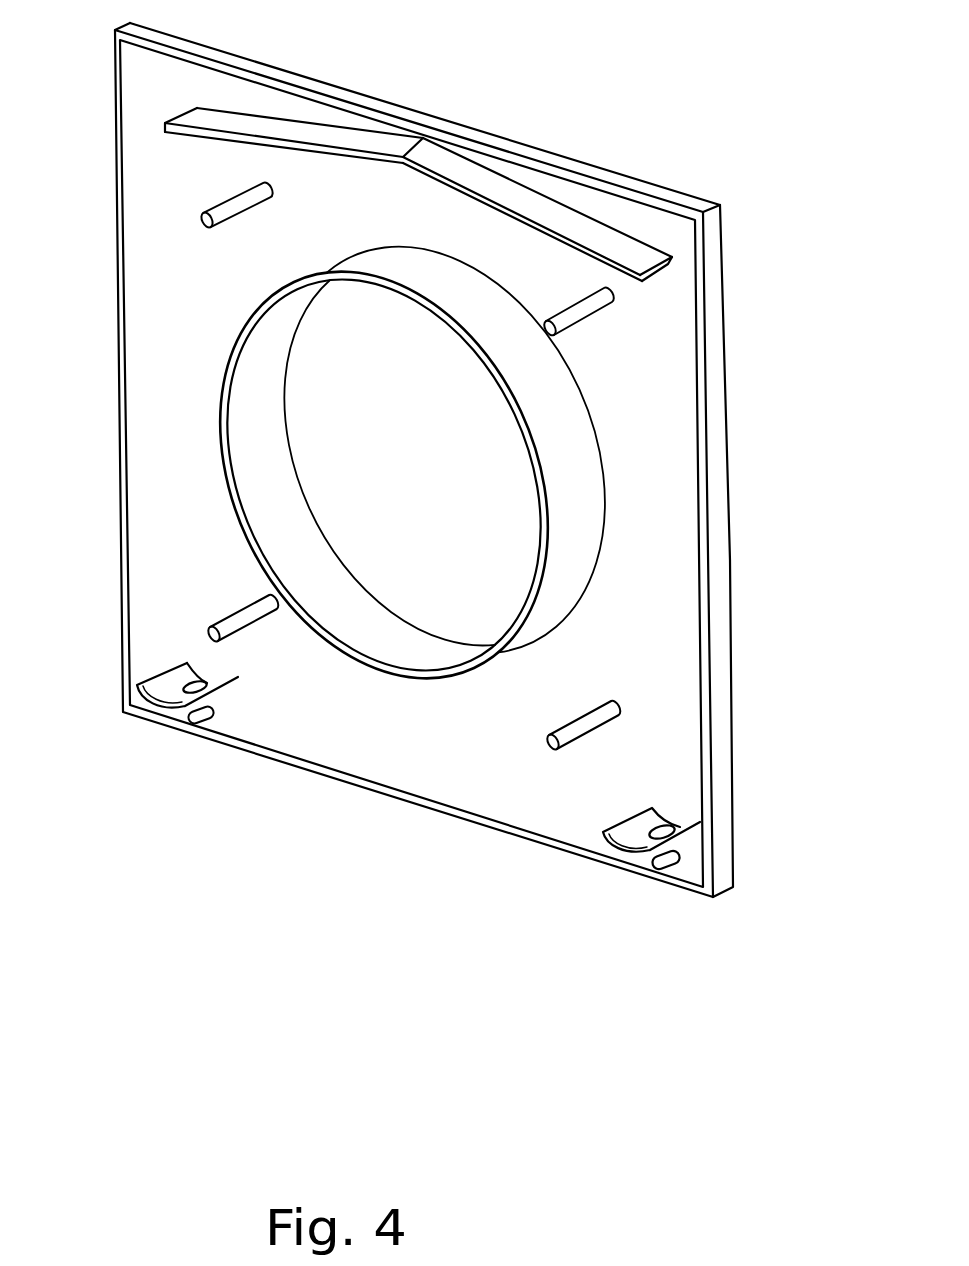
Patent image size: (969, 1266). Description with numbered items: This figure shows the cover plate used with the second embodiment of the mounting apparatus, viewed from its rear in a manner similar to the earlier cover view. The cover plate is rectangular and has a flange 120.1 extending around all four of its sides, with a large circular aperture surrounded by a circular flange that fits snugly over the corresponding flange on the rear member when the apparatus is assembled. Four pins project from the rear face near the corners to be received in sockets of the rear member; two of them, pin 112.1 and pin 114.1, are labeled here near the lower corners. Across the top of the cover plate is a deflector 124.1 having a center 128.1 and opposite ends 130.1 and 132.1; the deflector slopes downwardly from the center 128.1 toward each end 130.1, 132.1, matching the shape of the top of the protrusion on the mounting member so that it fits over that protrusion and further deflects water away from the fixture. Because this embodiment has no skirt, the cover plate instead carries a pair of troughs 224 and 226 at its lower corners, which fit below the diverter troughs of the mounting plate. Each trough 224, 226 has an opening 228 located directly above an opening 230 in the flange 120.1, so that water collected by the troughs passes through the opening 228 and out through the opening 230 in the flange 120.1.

The flange 120.1 is at (712, 432).
The deflector 124.1 is at (558, 403).
The center 128.1 is at (486, 152).
The end 130.1 is at (207, 117).
The end 132.1 is at (617, 243).
The pin 112.1 is at (610, 708).
The pin 114.1 is at (247, 615).
The trough 224 is at (650, 810).
The trough 226 is at (124, 638).
The opening 228 is at (187, 662).
The opening 230 is at (200, 722).